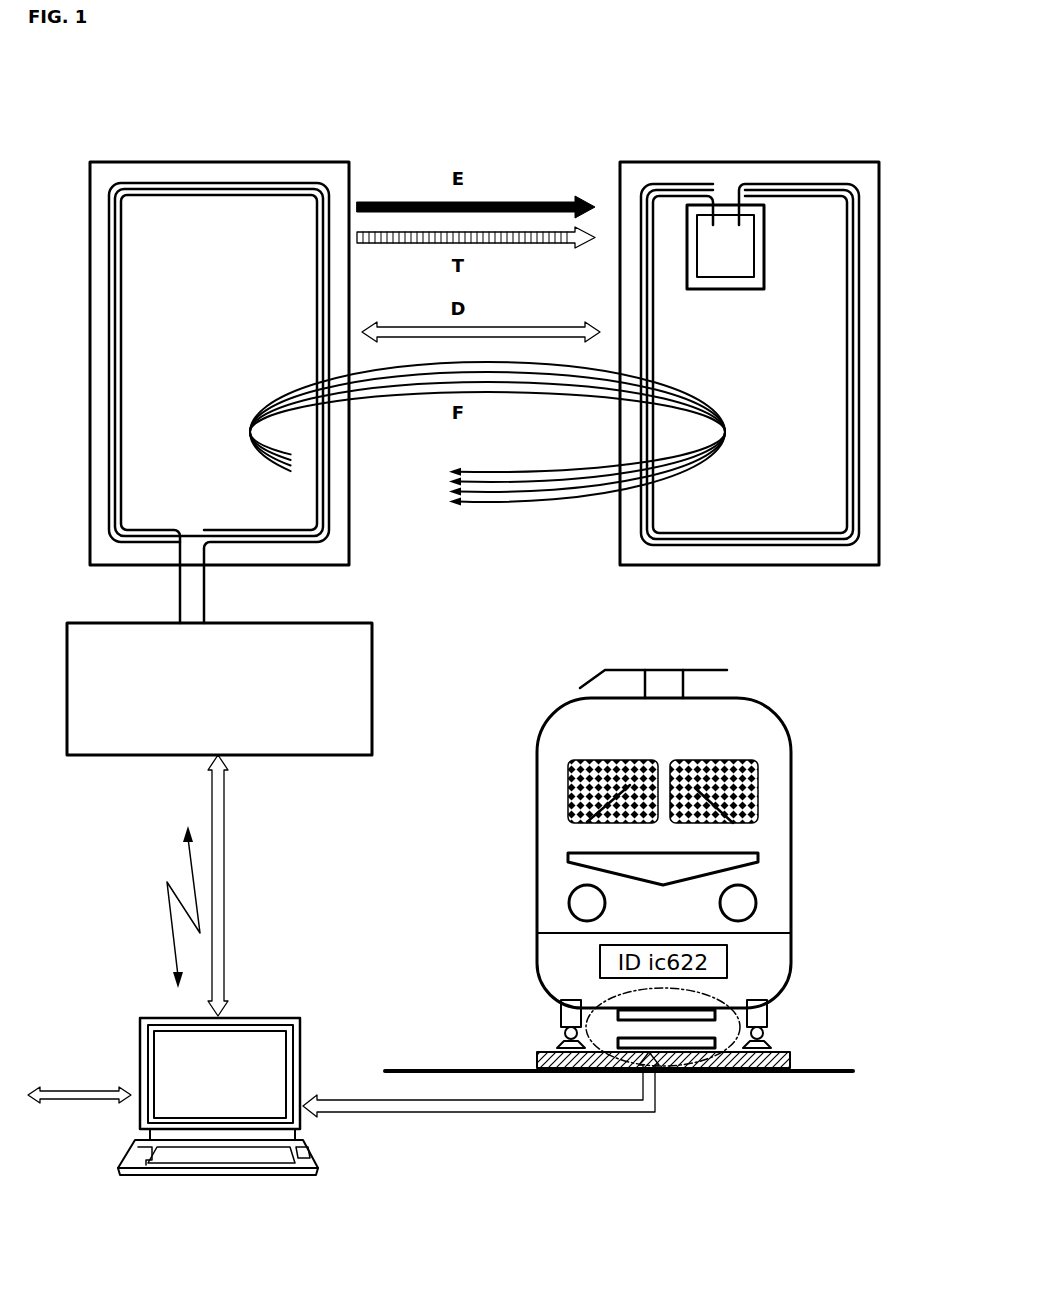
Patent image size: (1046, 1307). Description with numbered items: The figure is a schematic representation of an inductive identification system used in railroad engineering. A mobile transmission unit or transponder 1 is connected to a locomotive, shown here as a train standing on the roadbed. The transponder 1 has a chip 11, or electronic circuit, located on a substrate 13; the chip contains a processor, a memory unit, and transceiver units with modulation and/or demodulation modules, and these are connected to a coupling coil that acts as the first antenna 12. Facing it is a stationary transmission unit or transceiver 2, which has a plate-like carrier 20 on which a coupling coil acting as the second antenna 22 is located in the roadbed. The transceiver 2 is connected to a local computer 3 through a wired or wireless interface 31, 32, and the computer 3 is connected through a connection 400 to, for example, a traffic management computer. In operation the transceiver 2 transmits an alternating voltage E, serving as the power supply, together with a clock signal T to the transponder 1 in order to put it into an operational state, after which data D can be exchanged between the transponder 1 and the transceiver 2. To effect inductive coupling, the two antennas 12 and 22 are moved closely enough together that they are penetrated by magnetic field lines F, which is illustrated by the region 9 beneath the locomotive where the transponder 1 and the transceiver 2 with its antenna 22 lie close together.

The transponder 1 is at (703, 160).
The transceiver 2 is at (733, 1130).
The computer 3 is at (218, 1096).
The detection zone 9 is at (590, 1040).
The chip 11 is at (722, 205).
The first antenna 12 is at (828, 185).
The substrate 13 is at (793, 158).
The plate-like carrier 20 is at (193, 162).
The second antenna 22 is at (266, 182).
The wired interface 31 is at (433, 949).
The wireless interface 32 is at (163, 907).
The connection 400 is at (77, 1076).